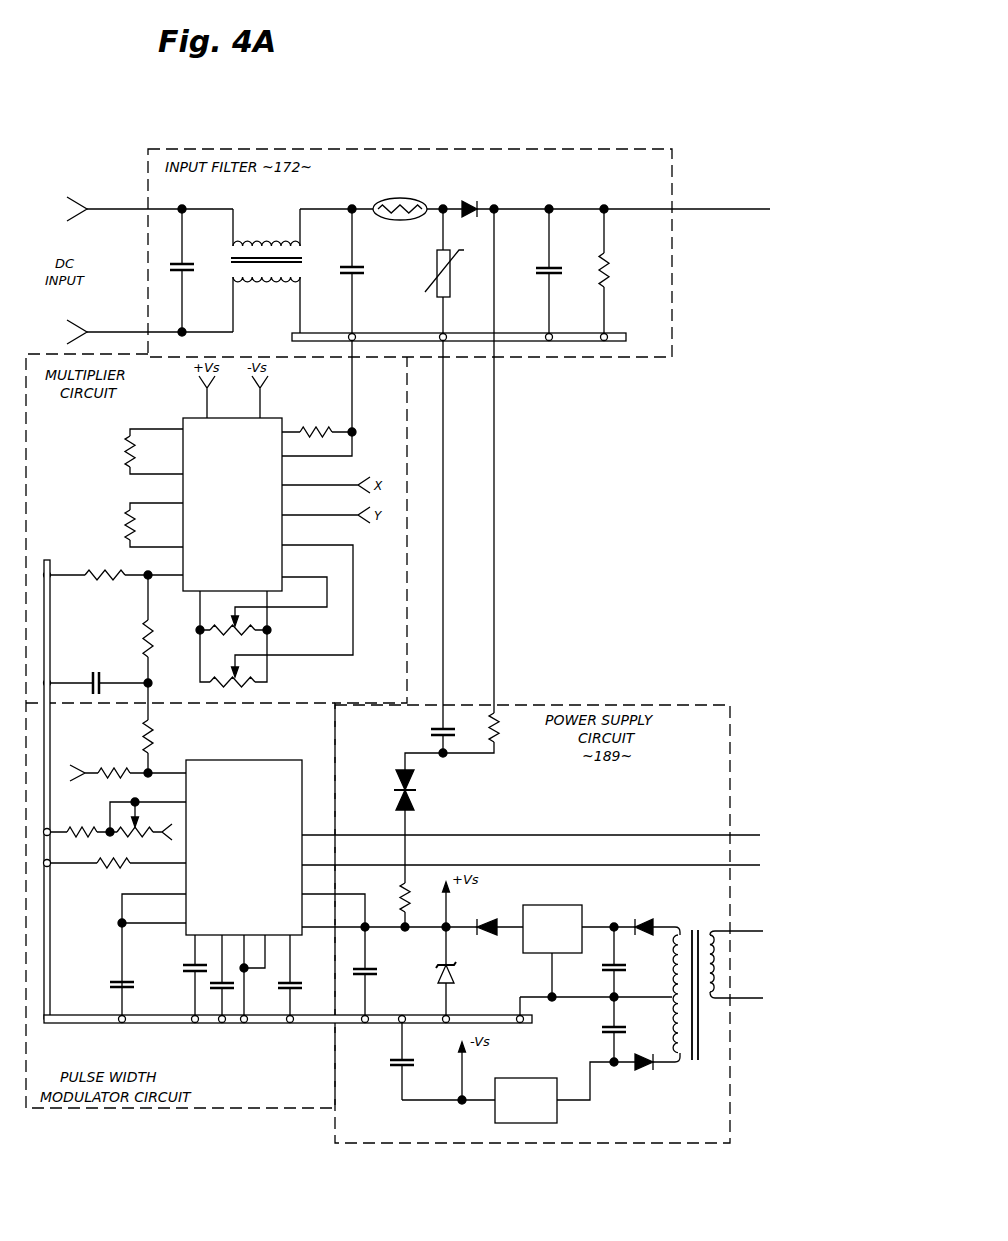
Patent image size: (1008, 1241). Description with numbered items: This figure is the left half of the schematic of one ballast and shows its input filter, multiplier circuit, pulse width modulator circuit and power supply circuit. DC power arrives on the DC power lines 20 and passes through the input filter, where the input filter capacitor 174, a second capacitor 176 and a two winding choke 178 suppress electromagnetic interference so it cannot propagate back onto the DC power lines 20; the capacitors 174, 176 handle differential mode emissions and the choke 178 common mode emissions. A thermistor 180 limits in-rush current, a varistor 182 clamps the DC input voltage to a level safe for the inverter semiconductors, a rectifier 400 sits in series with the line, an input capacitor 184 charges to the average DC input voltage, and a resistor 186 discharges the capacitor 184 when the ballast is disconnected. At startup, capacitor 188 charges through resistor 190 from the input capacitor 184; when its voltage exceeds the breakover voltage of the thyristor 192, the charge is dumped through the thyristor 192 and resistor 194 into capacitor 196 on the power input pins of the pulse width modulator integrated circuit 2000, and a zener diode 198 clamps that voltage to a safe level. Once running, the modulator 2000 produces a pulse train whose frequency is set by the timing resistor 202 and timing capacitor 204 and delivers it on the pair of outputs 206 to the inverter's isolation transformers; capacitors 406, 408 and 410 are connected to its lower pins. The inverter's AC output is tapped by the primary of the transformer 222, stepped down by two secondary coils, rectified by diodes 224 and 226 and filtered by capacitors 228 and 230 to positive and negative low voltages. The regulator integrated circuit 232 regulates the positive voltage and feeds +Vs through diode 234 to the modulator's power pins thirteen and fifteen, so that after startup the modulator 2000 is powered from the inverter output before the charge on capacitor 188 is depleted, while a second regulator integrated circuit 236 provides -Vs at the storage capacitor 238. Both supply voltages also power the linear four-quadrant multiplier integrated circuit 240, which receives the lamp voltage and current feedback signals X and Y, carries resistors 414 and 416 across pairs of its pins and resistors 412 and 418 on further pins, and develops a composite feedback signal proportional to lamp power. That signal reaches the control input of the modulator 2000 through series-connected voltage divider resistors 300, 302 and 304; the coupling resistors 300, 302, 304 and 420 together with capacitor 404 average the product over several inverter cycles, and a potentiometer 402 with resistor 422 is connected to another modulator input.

The DC power lines 20 is at (115, 322).
The input filter capacitor 174 is at (183, 262).
The second capacitor 176 is at (366, 268).
The two winding choke 178 is at (283, 243).
The thermistor 180 is at (400, 198).
The varistor 182 is at (427, 300).
The input capacitor 184 is at (553, 267).
The resistor 186 is at (608, 282).
The capacitor 188 is at (430, 732).
The resistor 190 is at (500, 745).
The thyristor 192 is at (416, 795).
The resistor 194 is at (400, 887).
The capacitor 196 is at (370, 976).
The zener diode 198 is at (460, 975).
The timing resistor 202 is at (105, 870).
The timing capacitor 204 is at (118, 980).
The outputs 206 is at (618, 861).
The transformer 222 is at (710, 922).
The diode 224 is at (648, 920).
The diode 226 is at (648, 1070).
The capacitor 228 is at (620, 970).
The capacitor 230 is at (610, 1028).
The regulator integrated circuit 232 is at (565, 905).
The diode 234 is at (490, 918).
The second voltage regulator integrated circuit 236 is at (530, 1078).
The storage capacitor 238 is at (398, 1068).
The multiplier integrated circuit 240 is at (233, 505).
The voltage divider resistor 300 is at (143, 640).
The voltage divider resistor 302 is at (153, 752).
The voltage divider resistor 304 is at (118, 768).
The rectifier 400 is at (478, 204).
The potentiometer 402 is at (130, 837).
The capacitor 404 is at (101, 672).
The ceramic capacitor 406 is at (191, 975).
The ceramic capacitor 408 is at (218, 1000).
The capacitor 410 is at (282, 1000).
The resistor 412 is at (306, 428).
The resistor 414 is at (125, 450).
The resistor 416 is at (125, 520).
The resistor 418 is at (240, 640).
The coupling resistor 420 is at (108, 585).
The resistor 422 is at (92, 826).
The pulse width modulator IC 2000 is at (248, 856).